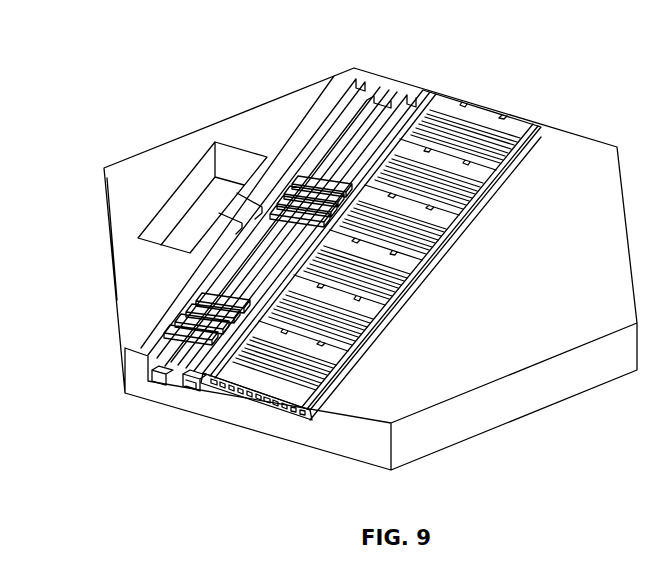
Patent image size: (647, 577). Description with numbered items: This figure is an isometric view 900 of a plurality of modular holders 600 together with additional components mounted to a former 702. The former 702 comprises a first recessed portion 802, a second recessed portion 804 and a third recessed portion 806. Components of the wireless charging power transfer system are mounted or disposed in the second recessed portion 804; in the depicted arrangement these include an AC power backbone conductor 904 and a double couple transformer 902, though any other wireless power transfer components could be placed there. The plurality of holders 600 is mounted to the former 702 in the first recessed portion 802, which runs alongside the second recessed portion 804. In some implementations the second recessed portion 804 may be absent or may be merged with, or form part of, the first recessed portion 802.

The isometric view 900 is at (138, 78).
The former 702 is at (567, 300).
The third recessed portion 806 is at (200, 220).
The second recessed portion 804 is at (431, 91).
The double couple transformer 902 is at (313, 170).
The AC power backbone conductor 904 is at (193, 391).
The first recessed portion 802 is at (554, 117).
The plurality of modular holders 600 is at (500, 208).